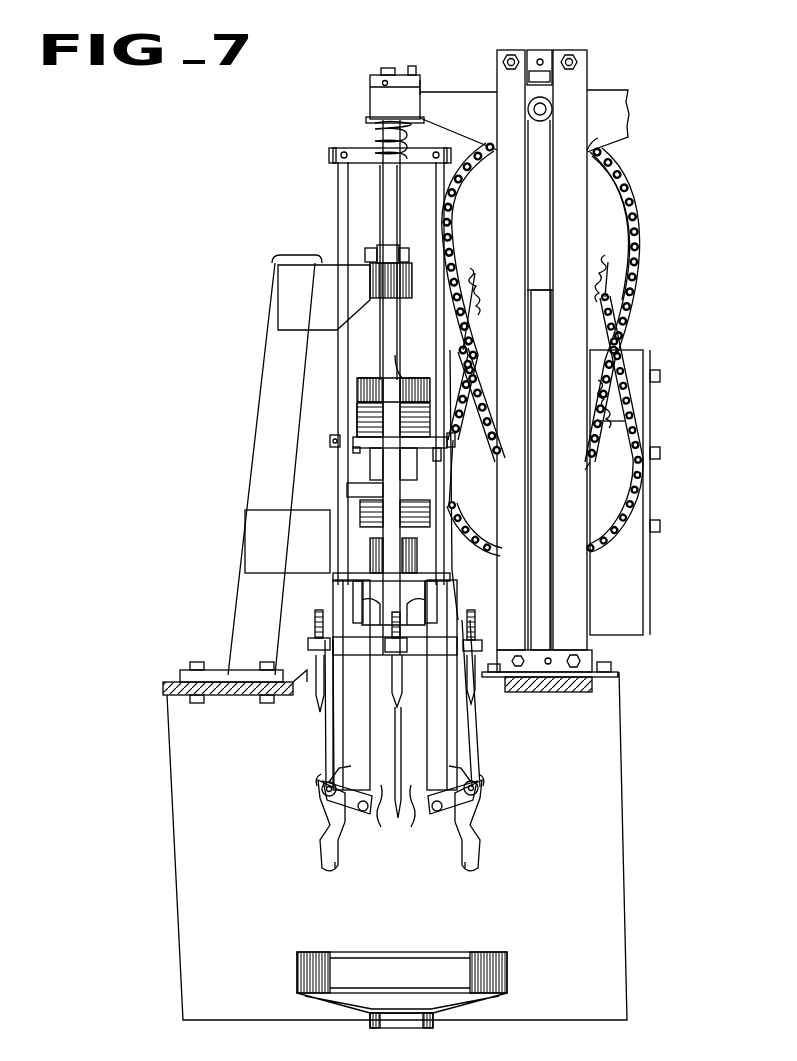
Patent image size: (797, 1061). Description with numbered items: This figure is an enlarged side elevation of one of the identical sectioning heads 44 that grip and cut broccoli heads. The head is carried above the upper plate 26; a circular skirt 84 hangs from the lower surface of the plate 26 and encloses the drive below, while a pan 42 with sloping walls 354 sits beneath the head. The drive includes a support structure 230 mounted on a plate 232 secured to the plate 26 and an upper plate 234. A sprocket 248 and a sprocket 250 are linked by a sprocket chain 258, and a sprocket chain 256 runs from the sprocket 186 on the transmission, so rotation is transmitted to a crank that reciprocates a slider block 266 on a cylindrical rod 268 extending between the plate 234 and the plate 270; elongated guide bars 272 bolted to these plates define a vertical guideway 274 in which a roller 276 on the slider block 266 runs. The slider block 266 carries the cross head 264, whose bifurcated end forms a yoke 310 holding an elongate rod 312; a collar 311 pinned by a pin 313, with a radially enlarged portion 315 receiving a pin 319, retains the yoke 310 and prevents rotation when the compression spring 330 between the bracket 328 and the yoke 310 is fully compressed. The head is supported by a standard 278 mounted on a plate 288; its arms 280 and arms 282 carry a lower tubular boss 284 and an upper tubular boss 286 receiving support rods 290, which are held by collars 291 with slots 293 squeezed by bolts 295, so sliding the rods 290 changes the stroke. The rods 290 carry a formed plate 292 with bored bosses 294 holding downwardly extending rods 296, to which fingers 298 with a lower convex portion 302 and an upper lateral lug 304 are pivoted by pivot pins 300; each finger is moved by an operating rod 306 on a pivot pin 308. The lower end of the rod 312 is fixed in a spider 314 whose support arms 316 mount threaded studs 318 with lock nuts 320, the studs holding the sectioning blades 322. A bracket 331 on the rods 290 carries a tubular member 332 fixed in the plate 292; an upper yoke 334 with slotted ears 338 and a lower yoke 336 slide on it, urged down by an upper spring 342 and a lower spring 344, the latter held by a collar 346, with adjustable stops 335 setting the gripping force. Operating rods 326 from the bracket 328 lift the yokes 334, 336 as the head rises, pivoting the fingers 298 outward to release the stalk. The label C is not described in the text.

The upper plate 26 is at (178, 689).
The pan 42 is at (384, 980).
The sectioning head 44 is at (253, 296).
The circular skirt 84 is at (190, 851).
The sprocket 186 is at (603, 463).
The support structure 230 is at (562, 47).
The plate 232 is at (619, 673).
The upper plate 234 is at (529, 50).
The sprocket 248 is at (625, 186).
The sprocket 250 is at (600, 422).
The sprocket chain 256 is at (631, 351).
The sprocket chain 258 is at (633, 306).
The cross head 264 is at (437, 103).
The slider block 266 is at (538, 196).
The cylindrical rod 268 is at (543, 552).
The plate 270 is at (600, 671).
The elongated guide bars 272 is at (525, 246).
The vertical guideway 274 is at (550, 148).
The roller 276 is at (528, 109).
The standard 278 is at (270, 355).
The arms 280 is at (245, 540).
The arms 282 is at (294, 318).
The lower tubular boss 284 is at (403, 558).
The upper tubular boss 286 is at (388, 281).
The plate 288 is at (216, 668).
The support rods 290 is at (386, 197).
The collar 291 is at (385, 255).
The formed plate 292 is at (390, 593).
The slot 293 is at (399, 250).
The bored bosses 294 is at (360, 621).
The bolt 295 is at (370, 258).
The downwardly extending rods 296 is at (365, 730).
The finger 298 is at (322, 840).
The pivot pin 300 is at (355, 810).
The lower convex portion 302 is at (465, 868).
The upper lateral lug 304 is at (320, 793).
The operating rod 306 is at (342, 496).
The pivot pin 308 is at (322, 790).
The yoke 310 is at (378, 102).
The collar 311 is at (375, 85).
The elongate rod 312 is at (391, 67).
The pin 313 is at (384, 81).
The spider 314 is at (375, 638).
The radially enlarged portion 315 is at (421, 85).
The support arms 316 is at (310, 644).
The threaded stud 318 is at (397, 682).
The pin 319 is at (416, 68).
The lock nuts 320 is at (312, 650).
The sectioning blade 322 is at (397, 820).
The operating rods 326 is at (340, 182).
The bracket 328 is at (366, 156).
The compression spring 330 is at (375, 135).
The bracket 331 is at (404, 368).
The tubular member 332 is at (372, 466).
The upper yoke 334 is at (360, 425).
The adjustable stop 335 is at (365, 415).
The lower yoke 336 is at (468, 538).
The slotted ears 338 is at (330, 438).
The upper spring 342 is at (368, 392).
The lower spring 344 is at (400, 532).
The collar 346 is at (365, 488).
The sloping walls 354 is at (312, 1000).
The container C is at (578, 808).